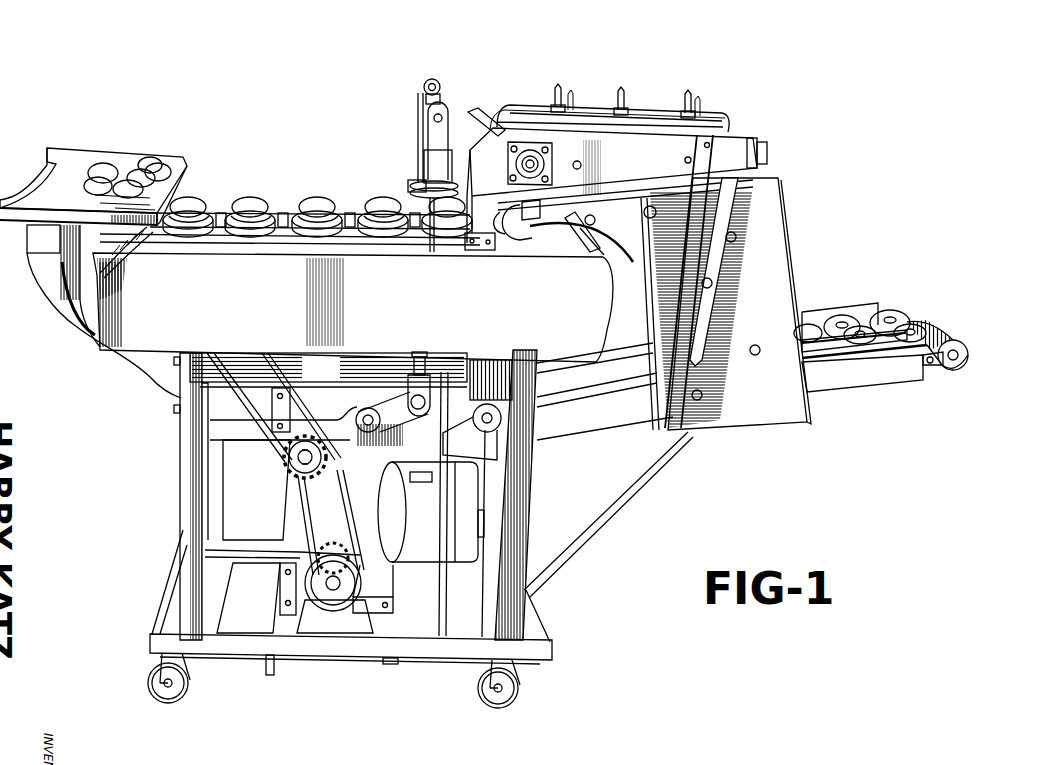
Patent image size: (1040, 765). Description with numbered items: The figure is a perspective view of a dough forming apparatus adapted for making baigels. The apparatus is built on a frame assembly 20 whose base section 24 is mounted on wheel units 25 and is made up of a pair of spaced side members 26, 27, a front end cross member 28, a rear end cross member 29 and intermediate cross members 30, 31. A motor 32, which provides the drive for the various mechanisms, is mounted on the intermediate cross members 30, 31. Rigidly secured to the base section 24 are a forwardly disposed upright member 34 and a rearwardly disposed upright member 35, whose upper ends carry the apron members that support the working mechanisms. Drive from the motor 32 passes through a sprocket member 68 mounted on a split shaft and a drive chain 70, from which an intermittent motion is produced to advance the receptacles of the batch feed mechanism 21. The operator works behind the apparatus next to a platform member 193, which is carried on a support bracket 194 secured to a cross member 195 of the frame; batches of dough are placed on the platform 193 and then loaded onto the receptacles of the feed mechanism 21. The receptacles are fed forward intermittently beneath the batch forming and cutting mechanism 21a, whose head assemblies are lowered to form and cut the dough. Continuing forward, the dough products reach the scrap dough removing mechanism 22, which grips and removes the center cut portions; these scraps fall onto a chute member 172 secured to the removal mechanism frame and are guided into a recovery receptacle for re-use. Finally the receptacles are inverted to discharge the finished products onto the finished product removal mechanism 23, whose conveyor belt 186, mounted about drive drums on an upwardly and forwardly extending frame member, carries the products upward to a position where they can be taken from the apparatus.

The platform member 193 is at (77, 162).
The batch feed mechanism 21 is at (286, 205).
The batch forming and cutting mechanism 21a is at (448, 87).
The scrap dough removing mechanism 22 is at (658, 113).
The chute member 172 is at (772, 288).
The conveyor belt 186 is at (945, 330).
The finished product removal mechanism 23 is at (862, 390).
The support bracket 194 is at (73, 328).
The cross member 195 is at (180, 373).
The drive chain 70 is at (277, 363).
The sprocket member 68 is at (280, 460).
The frame assembly 20 is at (178, 504).
The rearwardly disposed upright member 35 is at (190, 530).
The rear end cross member 29 is at (177, 594).
The side member 26 is at (263, 553).
The intermediate cross member 30 is at (277, 620).
The intermediate cross member 31 is at (377, 622).
The motor 32 is at (428, 533).
The forwardly disposed upright member 34 is at (528, 470).
The front end cross member 28 is at (535, 625).
The base section 24 is at (340, 655).
The wheel units 25 is at (190, 683).
The side member 27 is at (397, 655).